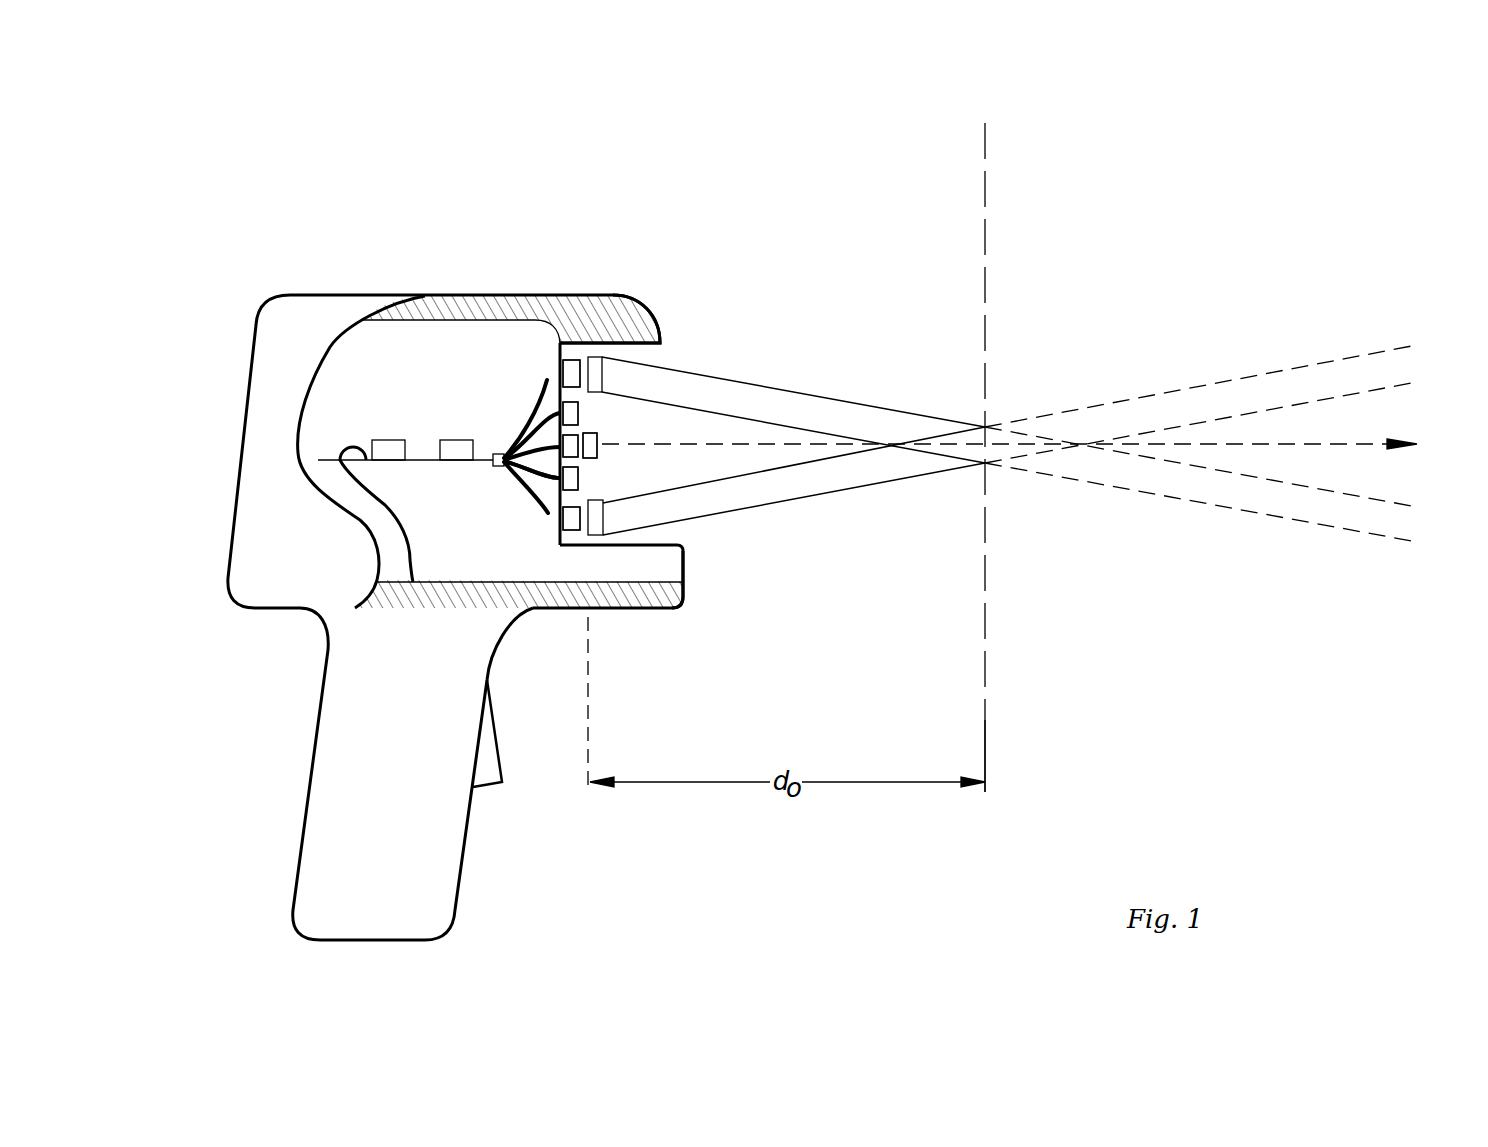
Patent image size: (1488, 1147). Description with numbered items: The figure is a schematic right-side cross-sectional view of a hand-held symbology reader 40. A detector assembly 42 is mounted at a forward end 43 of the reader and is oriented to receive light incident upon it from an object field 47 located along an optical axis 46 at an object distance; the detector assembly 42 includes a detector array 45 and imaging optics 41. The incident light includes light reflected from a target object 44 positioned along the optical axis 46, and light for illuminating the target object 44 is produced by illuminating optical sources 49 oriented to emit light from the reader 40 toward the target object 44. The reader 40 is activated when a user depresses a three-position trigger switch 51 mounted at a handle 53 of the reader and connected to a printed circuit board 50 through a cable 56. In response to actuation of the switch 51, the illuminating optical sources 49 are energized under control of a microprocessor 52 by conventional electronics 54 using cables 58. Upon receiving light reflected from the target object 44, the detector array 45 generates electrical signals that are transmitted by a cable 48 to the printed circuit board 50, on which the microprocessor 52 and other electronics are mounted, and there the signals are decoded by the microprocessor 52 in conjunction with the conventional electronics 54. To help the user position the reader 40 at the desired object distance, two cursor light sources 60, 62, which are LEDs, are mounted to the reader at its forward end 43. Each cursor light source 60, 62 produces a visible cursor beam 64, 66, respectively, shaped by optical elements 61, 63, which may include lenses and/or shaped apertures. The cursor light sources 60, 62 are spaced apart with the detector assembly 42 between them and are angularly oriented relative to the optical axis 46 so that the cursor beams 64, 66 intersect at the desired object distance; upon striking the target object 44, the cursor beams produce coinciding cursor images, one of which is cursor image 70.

The hand-held symbology reader 40 is at (603, 520).
The imaging optics 41 is at (512, 465).
The detector assembly 42 is at (597, 458).
The forward end 43 is at (645, 315).
The target object 44 is at (985, 245).
The detector array 45 is at (600, 440).
The optical axis 46 is at (1347, 443).
The object field 47 is at (964, 643).
The cable 48 is at (527, 423).
The illuminating optical sources 49 is at (580, 412).
The printed circuit board 50 is at (490, 457).
The three-position trigger switch 51 is at (495, 732).
The microprocessor 52 is at (383, 440).
The handle 53 is at (330, 783).
The conventional electronics 54 is at (455, 440).
The cable 56 is at (393, 515).
The cables 58 is at (550, 390).
The cursor light source 60 is at (582, 385).
The optical element 61 is at (602, 373).
The cursor light source 62 is at (580, 523).
The optical element 63 is at (683, 608).
The cursor beam 64 is at (892, 408).
The cursor beam 66 is at (873, 484).
The cursor image 70 is at (990, 463).